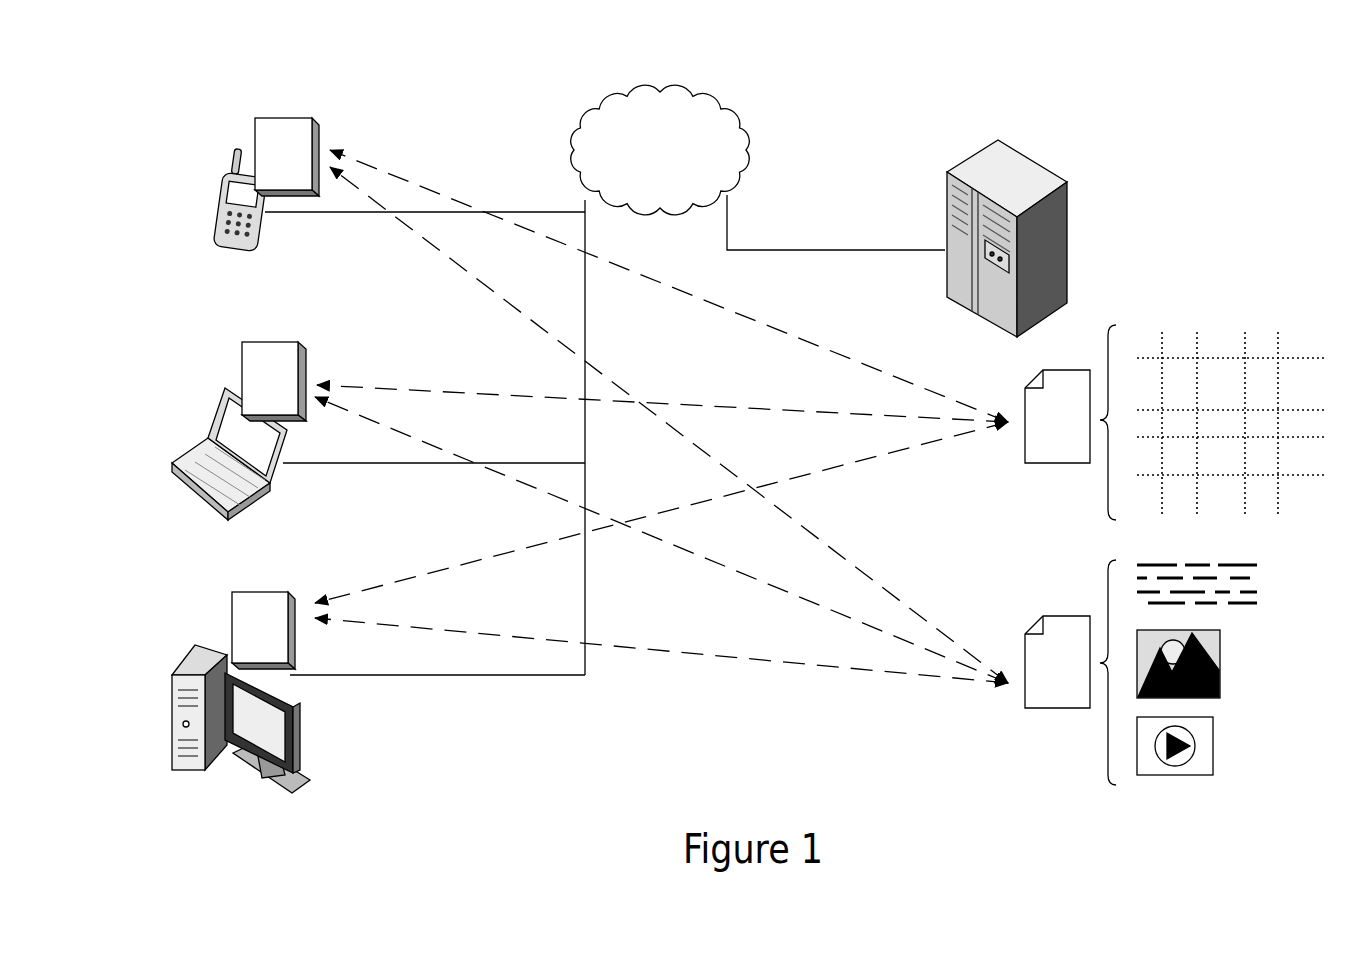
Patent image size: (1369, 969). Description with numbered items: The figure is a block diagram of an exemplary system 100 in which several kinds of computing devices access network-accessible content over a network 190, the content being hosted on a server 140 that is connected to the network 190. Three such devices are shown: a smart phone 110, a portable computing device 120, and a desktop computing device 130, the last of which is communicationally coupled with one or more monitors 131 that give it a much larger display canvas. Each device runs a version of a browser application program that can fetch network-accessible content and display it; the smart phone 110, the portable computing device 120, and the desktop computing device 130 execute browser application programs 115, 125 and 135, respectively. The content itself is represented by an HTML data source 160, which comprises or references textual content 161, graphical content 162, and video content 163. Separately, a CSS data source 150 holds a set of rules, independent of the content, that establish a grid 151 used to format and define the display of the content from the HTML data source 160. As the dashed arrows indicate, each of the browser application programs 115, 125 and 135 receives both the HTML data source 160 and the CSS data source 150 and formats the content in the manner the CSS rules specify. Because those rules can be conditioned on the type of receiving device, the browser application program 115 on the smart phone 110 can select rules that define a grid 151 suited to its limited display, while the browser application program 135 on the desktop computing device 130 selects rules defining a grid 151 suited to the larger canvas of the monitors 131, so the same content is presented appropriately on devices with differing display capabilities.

The system 100 is at (1203, 86).
The smart phone 110 is at (217, 197).
The browser application program 115 is at (312, 120).
The portable computing device 120 is at (215, 415).
The browser application program 125 is at (298, 343).
The desktop computing device 130 is at (178, 672).
The monitors 131 is at (300, 733).
The browser application program 135 is at (288, 593).
The server 140 is at (1020, 148).
The CSS data source 150 is at (1060, 467).
The grid 151 is at (1302, 347).
The HTML data source 160 is at (1060, 710).
The textual content 161 is at (1262, 578).
The graphical content 162 is at (1222, 650).
The video content 163 is at (1215, 733).
The network 190 is at (590, 98).